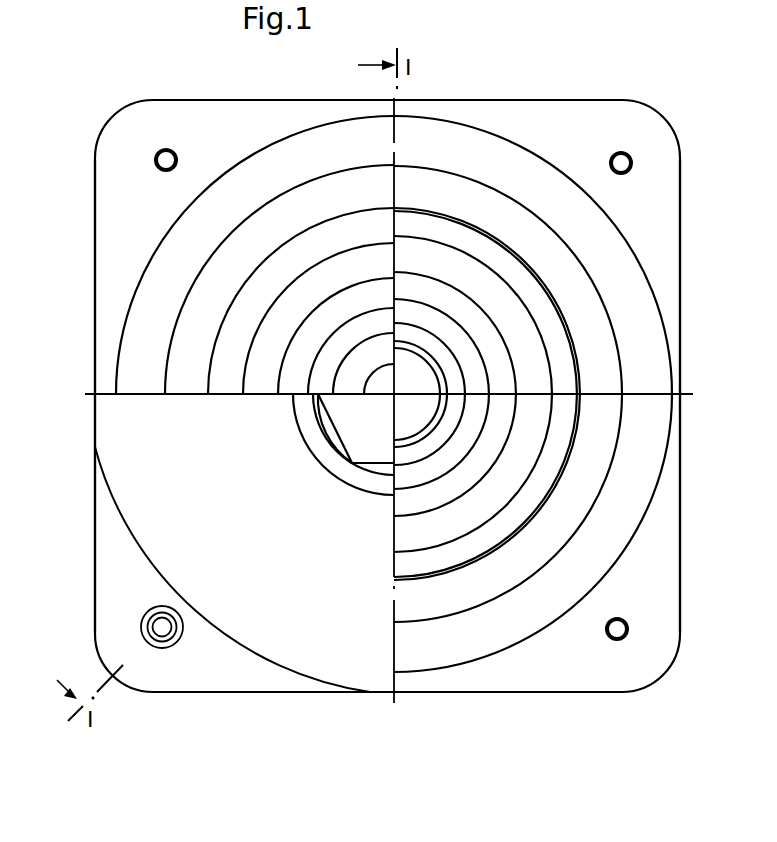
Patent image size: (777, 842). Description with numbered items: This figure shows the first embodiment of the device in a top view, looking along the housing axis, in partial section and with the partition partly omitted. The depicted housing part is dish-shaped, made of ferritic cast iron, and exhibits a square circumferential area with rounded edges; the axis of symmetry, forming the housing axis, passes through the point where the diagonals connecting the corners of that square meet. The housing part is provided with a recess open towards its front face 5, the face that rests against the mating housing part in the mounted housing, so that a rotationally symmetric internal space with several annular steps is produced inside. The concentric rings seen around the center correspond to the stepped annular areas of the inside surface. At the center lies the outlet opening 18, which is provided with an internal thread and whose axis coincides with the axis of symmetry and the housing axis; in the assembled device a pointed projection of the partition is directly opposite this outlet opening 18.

The front face 5 is at (578, 670).
The outlet opening 18 is at (378, 409).